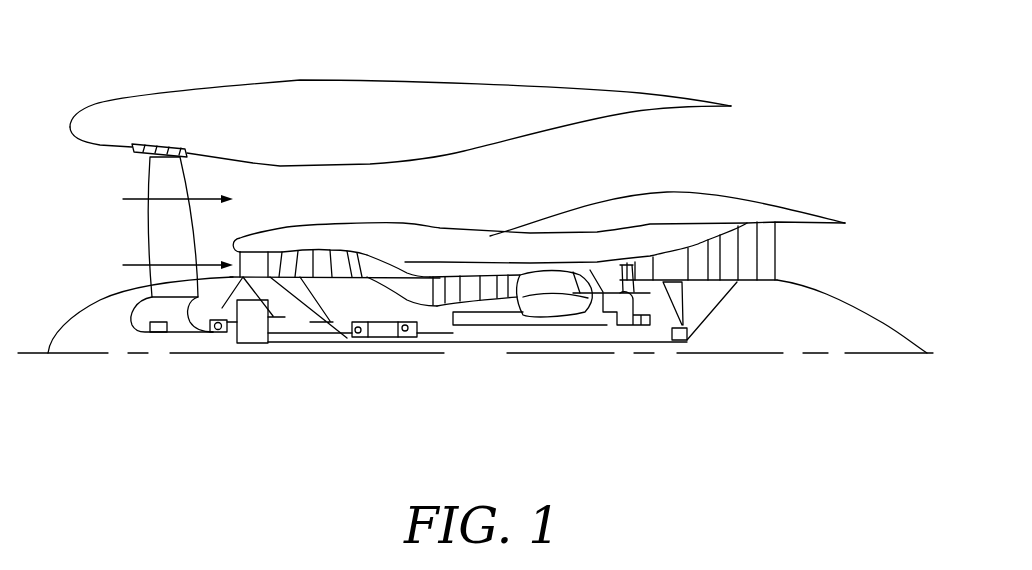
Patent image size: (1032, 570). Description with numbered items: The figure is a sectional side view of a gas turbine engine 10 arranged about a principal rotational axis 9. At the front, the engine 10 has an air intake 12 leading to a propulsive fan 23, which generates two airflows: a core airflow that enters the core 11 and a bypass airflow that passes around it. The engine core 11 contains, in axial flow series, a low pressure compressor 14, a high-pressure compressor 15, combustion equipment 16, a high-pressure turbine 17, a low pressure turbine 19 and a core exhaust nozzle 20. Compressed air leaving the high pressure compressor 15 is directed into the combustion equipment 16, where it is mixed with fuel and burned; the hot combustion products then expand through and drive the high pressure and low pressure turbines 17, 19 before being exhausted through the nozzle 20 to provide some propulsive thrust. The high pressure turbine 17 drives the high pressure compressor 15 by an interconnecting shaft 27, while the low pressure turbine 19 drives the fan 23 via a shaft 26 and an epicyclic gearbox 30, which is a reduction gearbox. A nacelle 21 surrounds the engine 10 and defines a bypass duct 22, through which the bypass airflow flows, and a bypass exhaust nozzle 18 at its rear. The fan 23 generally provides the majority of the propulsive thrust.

The principal rotational axis 9 is at (728, 356).
The gas turbine engine 10 is at (475, 227).
The core 11 is at (521, 238).
The air intake 12 is at (127, 248).
The low pressure compressor 14 is at (322, 257).
The high-pressure compressor 15 is at (470, 288).
The combustion equipment 16 is at (547, 290).
The high-pressure turbine 17 is at (612, 272).
The bypass exhaust nozzle 18 is at (731, 148).
The low pressure turbine 19 is at (748, 242).
The core exhaust nozzle 20 is at (820, 253).
The nacelle 21 is at (383, 93).
The bypass duct 22 is at (675, 163).
The propulsive fan 23 is at (155, 231).
The shaft 26 is at (464, 343).
The interconnecting shaft 27 is at (507, 328).
The epicyclic gearbox 30 is at (252, 333).